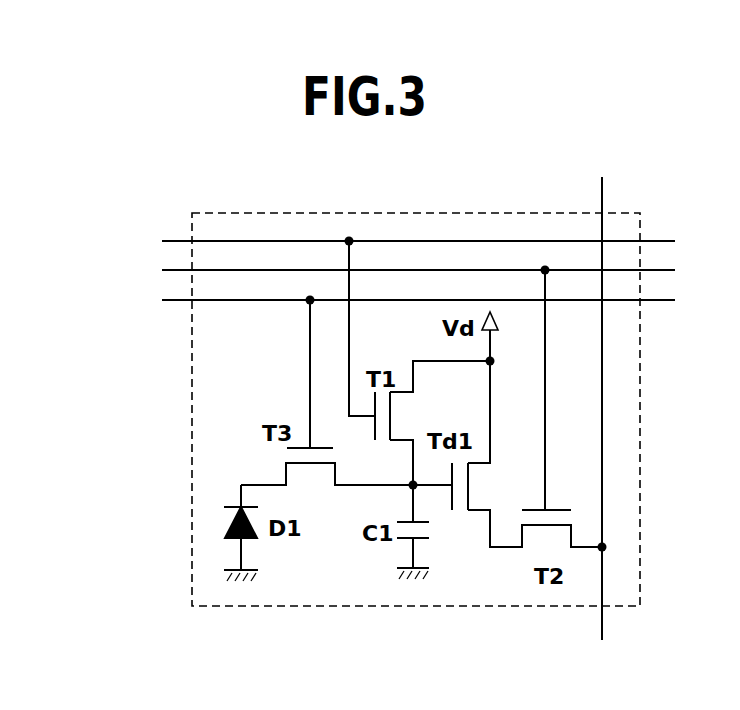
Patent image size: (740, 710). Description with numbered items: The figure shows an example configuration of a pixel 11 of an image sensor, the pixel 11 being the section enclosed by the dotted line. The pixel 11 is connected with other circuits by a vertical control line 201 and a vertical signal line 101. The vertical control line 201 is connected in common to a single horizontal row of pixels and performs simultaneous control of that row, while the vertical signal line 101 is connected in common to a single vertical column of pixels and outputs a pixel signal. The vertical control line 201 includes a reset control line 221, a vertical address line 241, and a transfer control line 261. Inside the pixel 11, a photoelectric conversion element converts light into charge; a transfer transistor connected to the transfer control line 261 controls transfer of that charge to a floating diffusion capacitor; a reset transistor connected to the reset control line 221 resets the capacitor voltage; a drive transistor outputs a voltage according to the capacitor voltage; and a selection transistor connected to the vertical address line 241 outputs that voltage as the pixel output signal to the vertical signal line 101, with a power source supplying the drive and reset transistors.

The pixel 11 is at (192, 413).
The vertical signal line 101 is at (602, 425).
The vertical control line 201 is at (357, 270).
The reset control line 221 is at (391, 241).
The vertical address line 241 is at (391, 271).
The transfer control line 261 is at (391, 299).